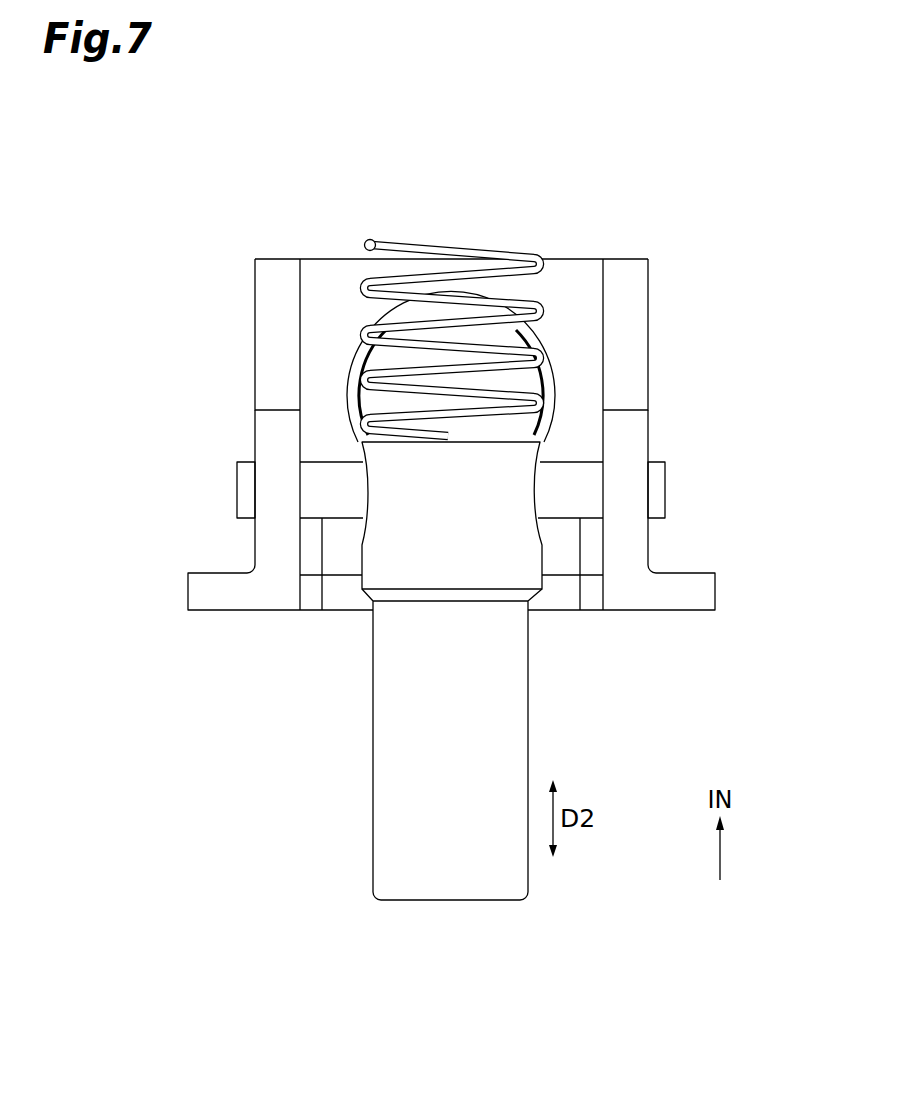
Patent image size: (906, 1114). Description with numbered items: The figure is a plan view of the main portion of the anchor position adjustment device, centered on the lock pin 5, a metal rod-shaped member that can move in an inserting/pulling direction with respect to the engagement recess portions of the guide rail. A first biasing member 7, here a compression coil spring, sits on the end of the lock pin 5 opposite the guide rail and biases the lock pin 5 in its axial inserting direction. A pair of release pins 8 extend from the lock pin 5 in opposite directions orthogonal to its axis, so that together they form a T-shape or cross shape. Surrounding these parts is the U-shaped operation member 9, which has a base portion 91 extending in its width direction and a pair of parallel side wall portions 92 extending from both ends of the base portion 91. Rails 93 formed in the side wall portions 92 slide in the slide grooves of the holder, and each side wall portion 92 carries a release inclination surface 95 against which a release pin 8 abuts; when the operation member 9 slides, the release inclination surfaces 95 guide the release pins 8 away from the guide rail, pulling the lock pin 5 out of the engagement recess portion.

The lock pin 5 is at (372, 745).
The first biasing member 7 is at (410, 240).
The release pin 8 is at (237, 488).
The operation member 9 is at (564, 254).
The base portion 91 is at (331, 310).
The side wall portion 92 is at (255, 426).
The rail 93 is at (188, 593).
The release inclination surface 95 is at (275, 338).